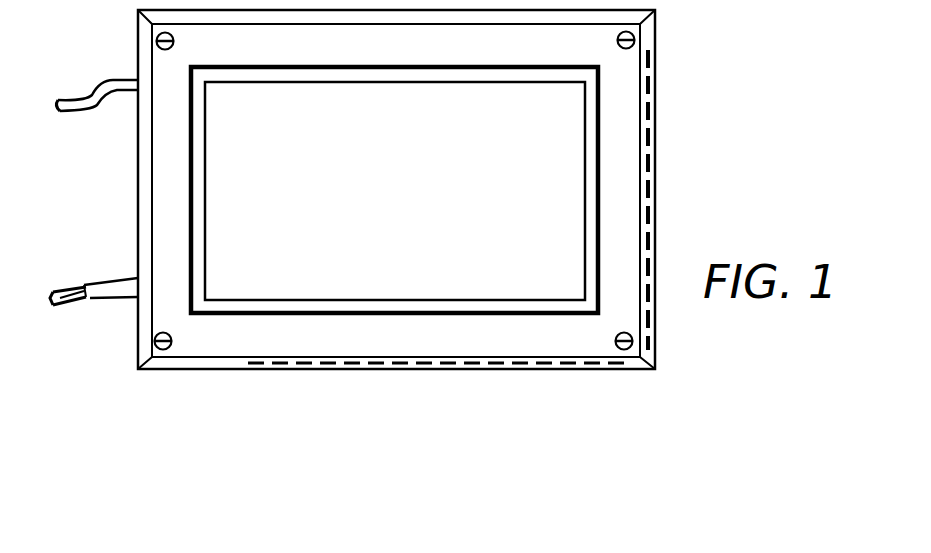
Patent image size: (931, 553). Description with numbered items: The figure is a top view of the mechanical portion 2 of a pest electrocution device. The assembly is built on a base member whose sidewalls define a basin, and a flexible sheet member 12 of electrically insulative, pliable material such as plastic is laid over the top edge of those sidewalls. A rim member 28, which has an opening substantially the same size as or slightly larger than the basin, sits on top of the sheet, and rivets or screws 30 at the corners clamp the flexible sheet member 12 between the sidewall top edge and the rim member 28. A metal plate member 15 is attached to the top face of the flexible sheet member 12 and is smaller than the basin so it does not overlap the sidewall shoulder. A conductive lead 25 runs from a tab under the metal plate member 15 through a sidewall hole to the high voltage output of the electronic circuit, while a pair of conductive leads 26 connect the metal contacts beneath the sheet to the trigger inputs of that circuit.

The mechanical portion 2 is at (713, 68).
The flexible sheet member 12 is at (335, 303).
The metal plate member 15 is at (485, 280).
The conductive lead 25 is at (84, 96).
The conductive leads 26 is at (107, 277).
The rim member 28 is at (209, 340).
The screws 30 is at (624, 350).